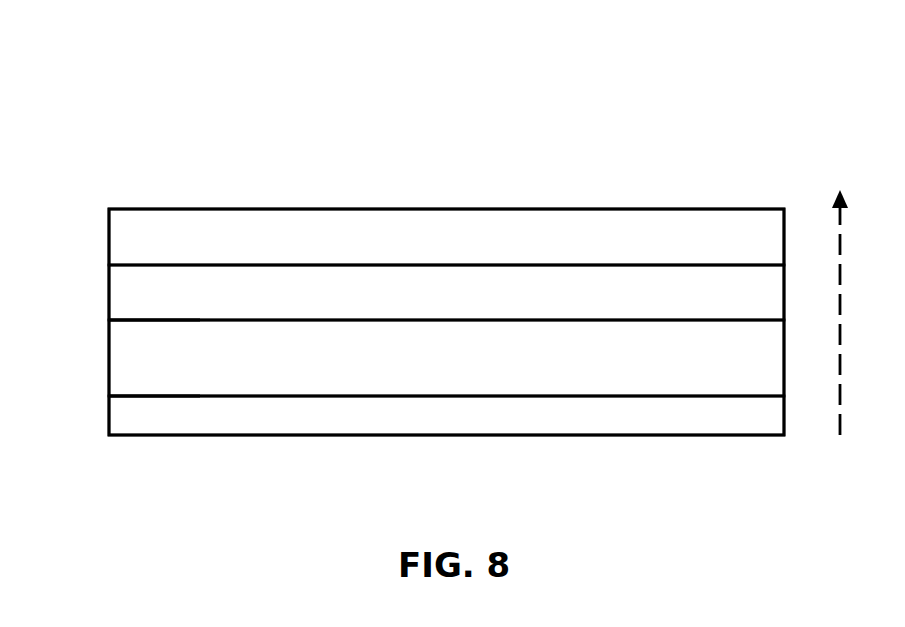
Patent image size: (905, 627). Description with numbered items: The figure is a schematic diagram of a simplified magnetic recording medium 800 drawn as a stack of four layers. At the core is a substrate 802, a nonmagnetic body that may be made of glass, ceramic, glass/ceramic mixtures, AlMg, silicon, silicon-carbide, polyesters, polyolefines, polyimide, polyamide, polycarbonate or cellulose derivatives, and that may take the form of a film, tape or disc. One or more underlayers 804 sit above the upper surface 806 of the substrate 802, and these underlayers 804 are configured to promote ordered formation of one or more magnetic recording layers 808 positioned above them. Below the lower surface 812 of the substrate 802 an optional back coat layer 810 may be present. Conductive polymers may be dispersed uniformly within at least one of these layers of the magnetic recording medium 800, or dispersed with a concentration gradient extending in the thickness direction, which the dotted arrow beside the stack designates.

The magnetic recording medium 800 is at (231, 80).
The magnetic recording layer 808 is at (467, 248).
The underlayer 804 is at (467, 304).
The substrate 802 is at (467, 368).
The back coat layer 810 is at (467, 426).
The upper surface 806 is at (132, 306).
The lower surface 812 is at (136, 412).